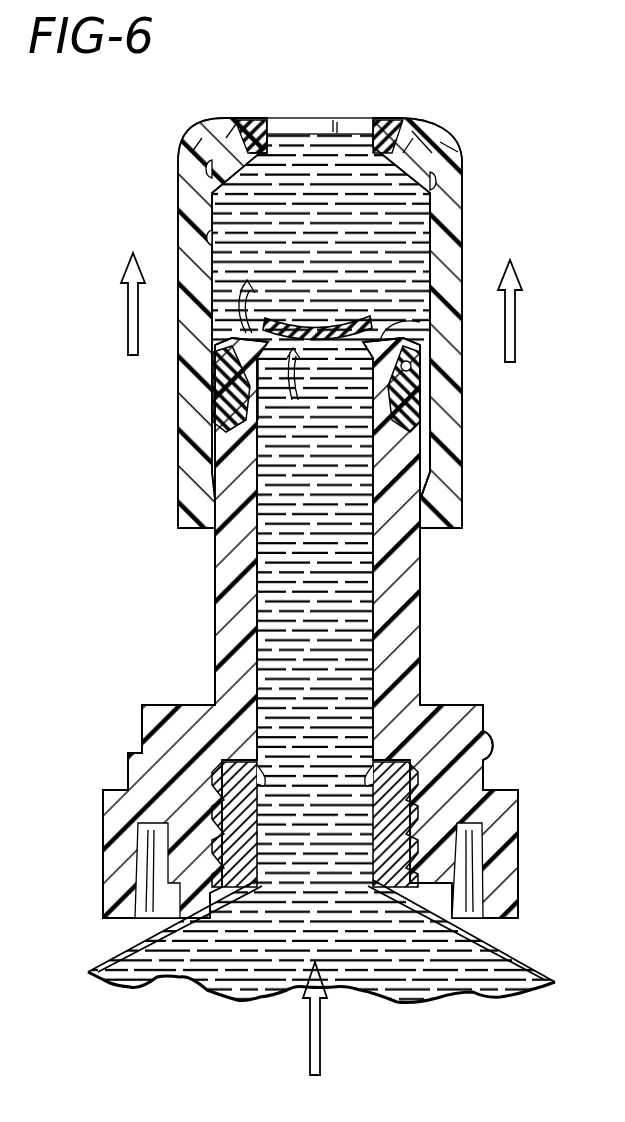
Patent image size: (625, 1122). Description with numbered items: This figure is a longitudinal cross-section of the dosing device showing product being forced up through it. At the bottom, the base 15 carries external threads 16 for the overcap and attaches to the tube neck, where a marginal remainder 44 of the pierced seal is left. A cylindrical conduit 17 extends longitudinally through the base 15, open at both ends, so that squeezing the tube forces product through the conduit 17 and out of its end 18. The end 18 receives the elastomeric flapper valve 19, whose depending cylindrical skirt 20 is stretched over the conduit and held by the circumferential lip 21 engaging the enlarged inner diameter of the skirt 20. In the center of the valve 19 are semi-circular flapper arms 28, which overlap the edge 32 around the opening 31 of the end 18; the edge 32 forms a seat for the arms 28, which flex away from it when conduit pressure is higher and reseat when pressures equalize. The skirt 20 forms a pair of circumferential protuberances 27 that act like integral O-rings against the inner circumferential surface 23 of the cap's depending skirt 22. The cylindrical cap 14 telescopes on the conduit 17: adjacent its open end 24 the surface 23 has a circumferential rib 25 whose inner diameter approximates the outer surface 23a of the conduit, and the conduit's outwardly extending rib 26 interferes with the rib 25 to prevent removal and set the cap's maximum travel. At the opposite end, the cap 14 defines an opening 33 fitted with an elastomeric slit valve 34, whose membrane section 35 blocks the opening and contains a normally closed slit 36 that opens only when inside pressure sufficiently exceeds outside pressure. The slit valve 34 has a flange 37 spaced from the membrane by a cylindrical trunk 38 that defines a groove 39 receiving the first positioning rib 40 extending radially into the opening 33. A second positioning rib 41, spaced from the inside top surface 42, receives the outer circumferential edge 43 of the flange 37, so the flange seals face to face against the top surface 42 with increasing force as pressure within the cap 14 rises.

The cap 14 is at (452, 480).
The base 15 is at (440, 702).
The external threads 16 is at (494, 758).
The cylindrical conduit 17 is at (422, 600).
The end 18 is at (321, 688).
The flapper valve 19 is at (326, 316).
The depending cylindrical skirt 20 is at (428, 390).
The circumferential lip 21 is at (410, 366).
The depending skirt 22 is at (178, 452).
The inner circumferential surface 23 is at (212, 236).
The outer surface 23a is at (214, 618).
The open end 24 is at (440, 530).
The circumferential rib 25 is at (432, 506).
The outwardly extending rib 26 is at (432, 452).
The circumferential protuberances 27 is at (240, 402).
The flapper arms 28 is at (245, 318).
The opening 31 is at (275, 401).
The edge 32 is at (228, 350).
The opening 33 is at (404, 124).
The slit valve 34 is at (280, 120).
The membrane section 35 is at (368, 120).
The slit 36 is at (335, 120).
The flange 37 is at (448, 142).
The cylindrical trunk 38 is at (410, 132).
The groove 39 is at (262, 120).
The first positioning rib 40 is at (240, 124).
The second positioning rib 41 is at (436, 180).
The inside top surface 42 is at (206, 136).
The outer circumferential edge 43 is at (207, 164).
The marginal remainder 44 is at (265, 780).